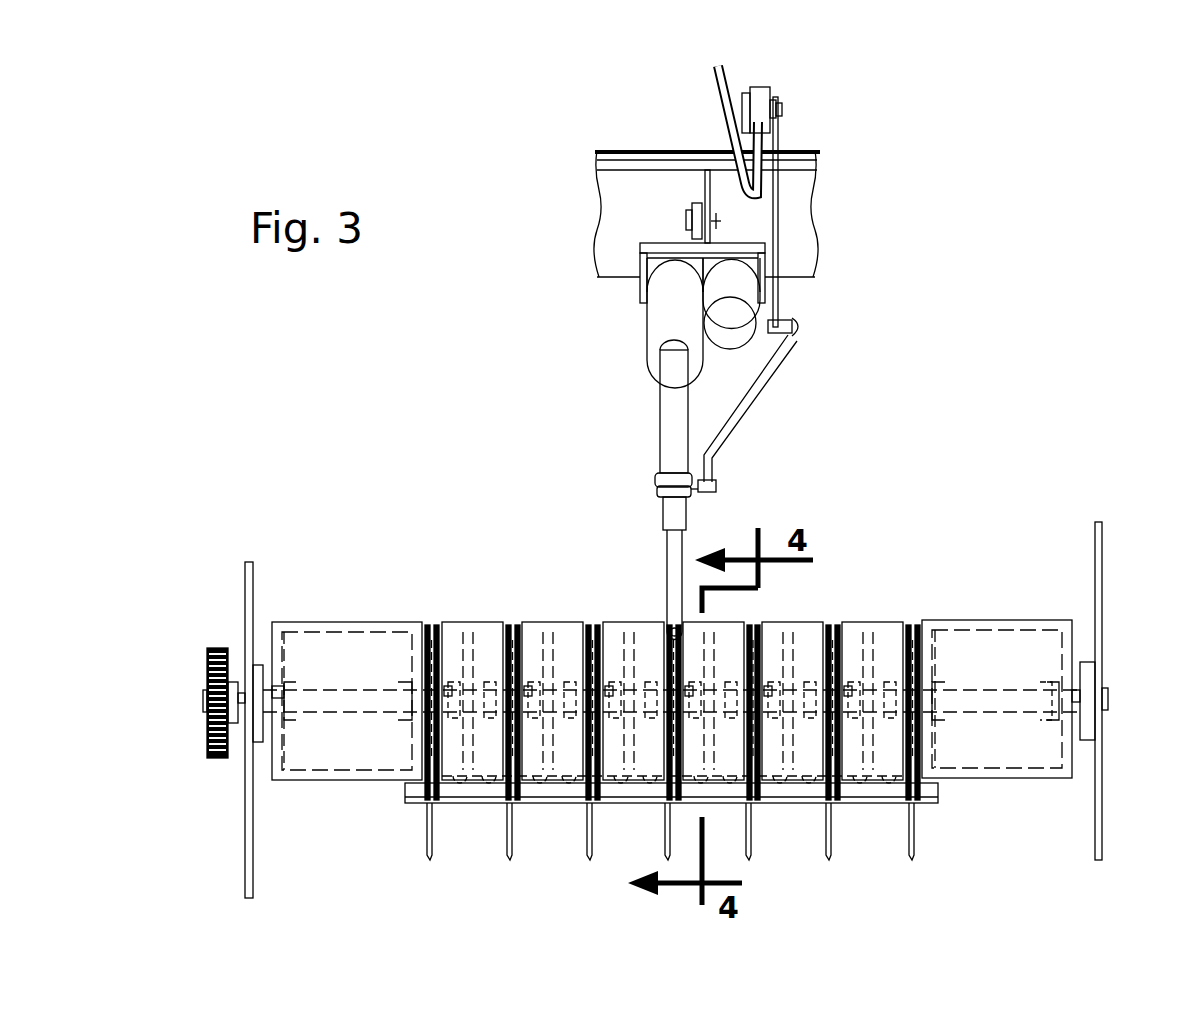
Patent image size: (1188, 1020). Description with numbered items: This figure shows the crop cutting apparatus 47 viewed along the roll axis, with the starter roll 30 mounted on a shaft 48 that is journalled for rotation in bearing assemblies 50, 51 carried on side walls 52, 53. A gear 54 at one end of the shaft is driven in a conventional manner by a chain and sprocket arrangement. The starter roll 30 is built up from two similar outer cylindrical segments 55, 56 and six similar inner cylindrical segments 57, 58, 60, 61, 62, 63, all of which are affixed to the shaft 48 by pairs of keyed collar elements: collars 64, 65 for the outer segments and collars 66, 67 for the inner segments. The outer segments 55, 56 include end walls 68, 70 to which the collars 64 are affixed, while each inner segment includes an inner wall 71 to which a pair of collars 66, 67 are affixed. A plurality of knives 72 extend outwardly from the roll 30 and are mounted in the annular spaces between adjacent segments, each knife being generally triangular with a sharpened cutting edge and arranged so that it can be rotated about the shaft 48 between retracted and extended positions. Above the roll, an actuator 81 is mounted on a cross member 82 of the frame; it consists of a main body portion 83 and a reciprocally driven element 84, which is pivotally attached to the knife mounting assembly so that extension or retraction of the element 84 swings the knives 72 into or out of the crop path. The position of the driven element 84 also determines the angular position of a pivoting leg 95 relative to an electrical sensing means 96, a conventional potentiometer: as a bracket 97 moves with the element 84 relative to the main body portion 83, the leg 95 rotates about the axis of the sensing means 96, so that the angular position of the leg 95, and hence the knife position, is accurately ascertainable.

The starter roll 30 is at (905, 528).
The crop cutting apparatus 47 is at (858, 426).
The shaft 48 is at (992, 700).
The bearing assembly 50 is at (1085, 665).
The bearing assembly 51 is at (258, 668).
The side wall 52 is at (1100, 580).
The side wall 53 is at (245, 570).
The gear 54 is at (217, 762).
The outer cylindrical segment 55 is at (972, 765).
The outer cylindrical segment 56 is at (330, 632).
The inner cylindrical segment 57 is at (890, 640).
The inner cylindrical segment 58 is at (770, 650).
The inner cylindrical segment 60 is at (725, 632).
The inner cylindrical segment 61 is at (628, 635).
The inner cylindrical segment 62 is at (535, 632).
The inner cylindrical segment 63 is at (492, 650).
The keyed collar element 64 is at (285, 715).
The keyed collar element 65 is at (410, 715).
The keyed collar element 66 is at (475, 790).
The keyed collar element 67 is at (450, 790).
The end wall 68 is at (412, 660).
The end wall 70 is at (284, 632).
The inner wall 71 is at (460, 650).
The knife 72 is at (427, 835).
The actuator 81 is at (568, 287).
The cross member 82 is at (640, 190).
The main body portion 83 is at (650, 333).
The reciprocally driven element 84 is at (663, 438).
The pivoting leg 95 is at (777, 222).
The electrical sensing means 96 is at (775, 90).
The bracket 97 is at (660, 490).